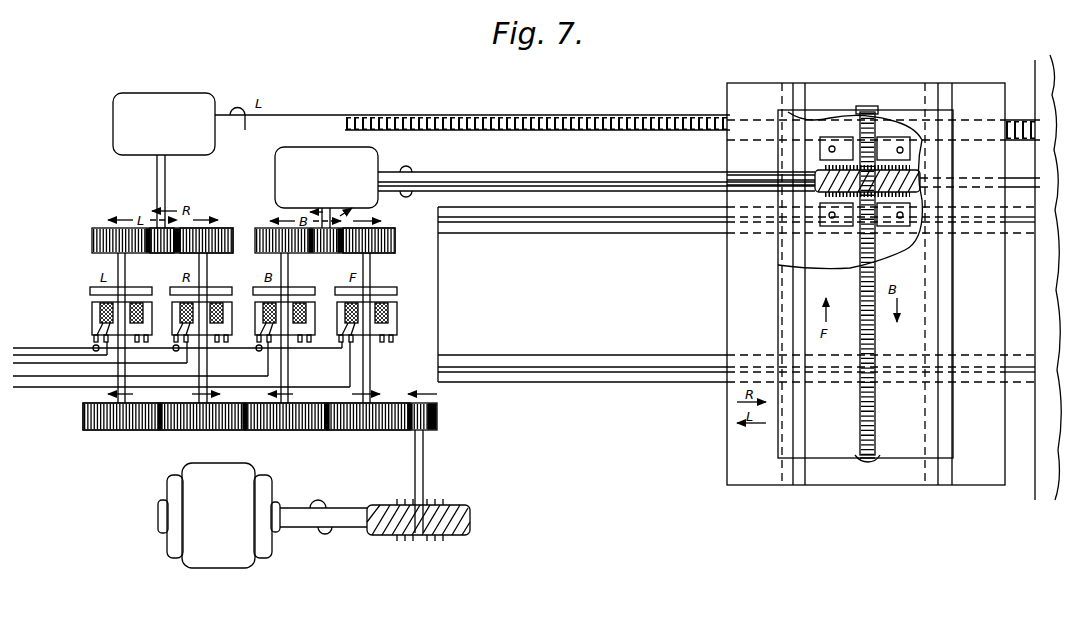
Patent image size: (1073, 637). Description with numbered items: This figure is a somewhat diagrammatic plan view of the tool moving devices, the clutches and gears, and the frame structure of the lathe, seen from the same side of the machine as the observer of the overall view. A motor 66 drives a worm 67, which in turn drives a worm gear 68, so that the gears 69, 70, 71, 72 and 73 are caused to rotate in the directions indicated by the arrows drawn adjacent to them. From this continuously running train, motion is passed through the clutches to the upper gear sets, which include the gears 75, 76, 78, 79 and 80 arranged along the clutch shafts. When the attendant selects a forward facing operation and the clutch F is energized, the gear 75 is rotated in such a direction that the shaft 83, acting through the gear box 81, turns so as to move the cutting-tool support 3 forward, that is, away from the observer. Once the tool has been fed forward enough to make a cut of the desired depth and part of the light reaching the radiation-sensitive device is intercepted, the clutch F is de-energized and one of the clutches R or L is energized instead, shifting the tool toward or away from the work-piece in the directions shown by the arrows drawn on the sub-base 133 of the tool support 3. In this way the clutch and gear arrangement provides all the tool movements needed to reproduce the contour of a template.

The cutting-tool support 3 is at (832, 432).
The motor 66 is at (143, 561).
The worm 67 is at (428, 535).
The worm gear 68 is at (462, 505).
The gear 69 is at (438, 427).
The gear 70 is at (356, 431).
The gear 71 is at (288, 431).
The gear 72 is at (212, 431).
The gear 73 is at (125, 431).
The gear 75 is at (385, 253).
The gear 76 is at (325, 253).
The gear 78 is at (222, 253).
The gear 79 is at (165, 253).
The gear 80 is at (97, 253).
The gear box 81 is at (336, 188).
The shaft 83 is at (536, 172).
The sub-base 133 is at (729, 464).